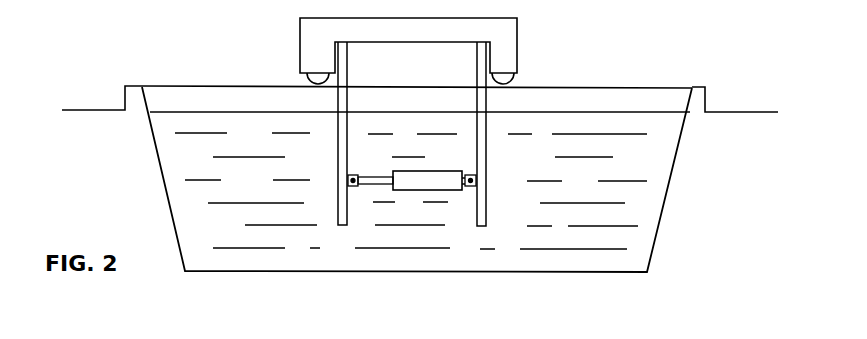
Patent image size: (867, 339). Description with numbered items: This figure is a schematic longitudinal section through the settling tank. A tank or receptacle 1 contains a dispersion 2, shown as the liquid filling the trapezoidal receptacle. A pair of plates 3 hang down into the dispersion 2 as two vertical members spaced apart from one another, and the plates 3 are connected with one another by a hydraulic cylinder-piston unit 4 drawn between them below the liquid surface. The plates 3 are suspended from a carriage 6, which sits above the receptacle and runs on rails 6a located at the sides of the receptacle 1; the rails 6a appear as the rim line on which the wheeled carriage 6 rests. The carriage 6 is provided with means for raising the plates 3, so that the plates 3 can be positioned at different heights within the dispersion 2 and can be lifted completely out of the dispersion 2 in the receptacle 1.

The tank or receptacle 1 is at (209, 278).
The dispersion 2 is at (257, 220).
The plates 3 is at (343, 195).
The hydraulic cylinder-piston unit 4 is at (420, 181).
The carriage 6 is at (502, 53).
The rails 6a is at (603, 88).